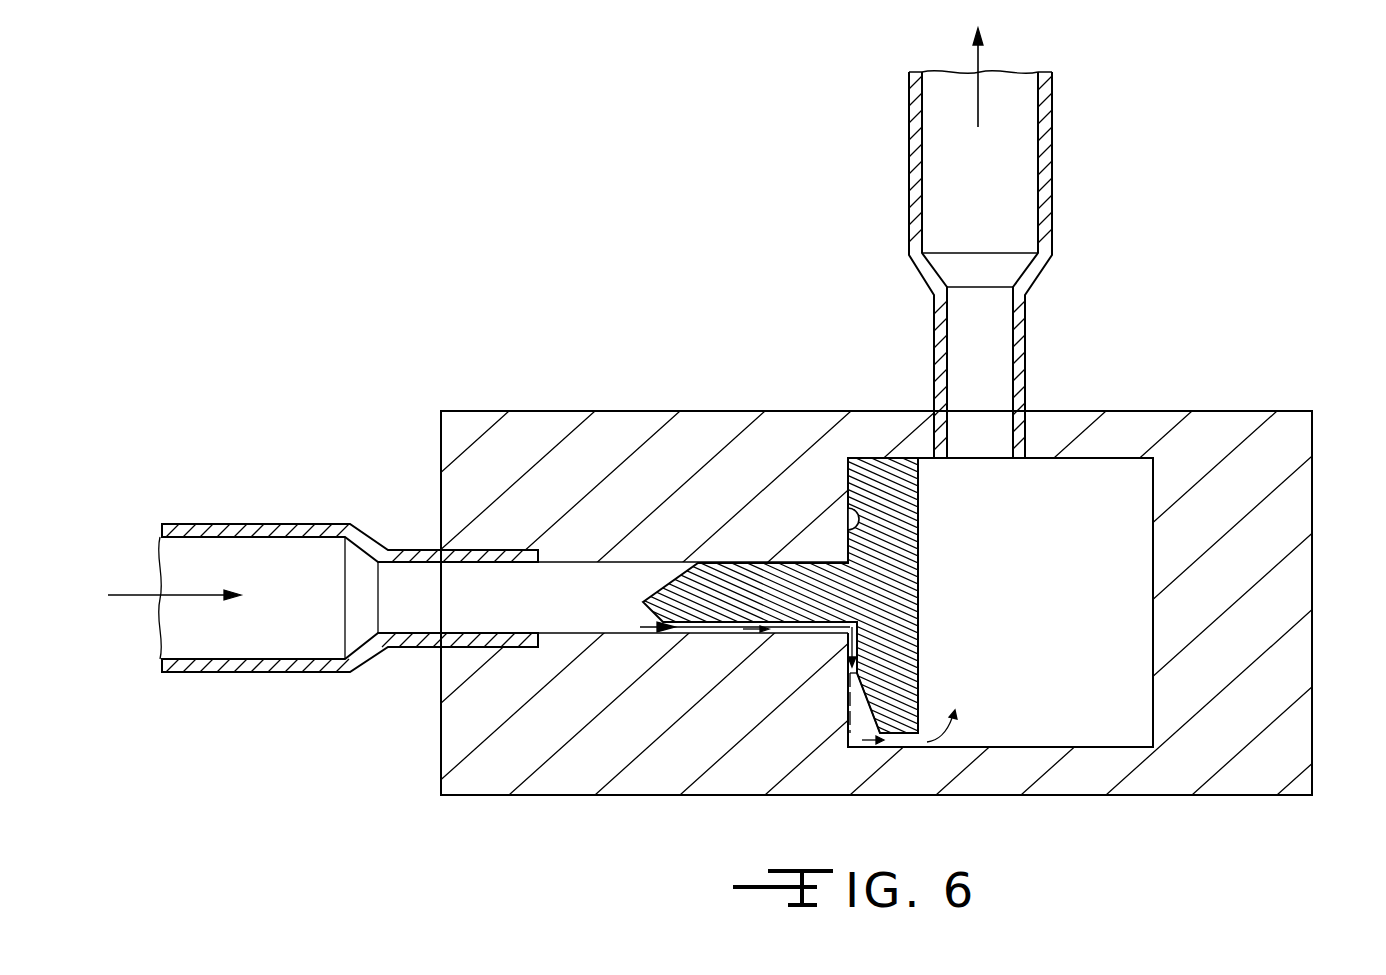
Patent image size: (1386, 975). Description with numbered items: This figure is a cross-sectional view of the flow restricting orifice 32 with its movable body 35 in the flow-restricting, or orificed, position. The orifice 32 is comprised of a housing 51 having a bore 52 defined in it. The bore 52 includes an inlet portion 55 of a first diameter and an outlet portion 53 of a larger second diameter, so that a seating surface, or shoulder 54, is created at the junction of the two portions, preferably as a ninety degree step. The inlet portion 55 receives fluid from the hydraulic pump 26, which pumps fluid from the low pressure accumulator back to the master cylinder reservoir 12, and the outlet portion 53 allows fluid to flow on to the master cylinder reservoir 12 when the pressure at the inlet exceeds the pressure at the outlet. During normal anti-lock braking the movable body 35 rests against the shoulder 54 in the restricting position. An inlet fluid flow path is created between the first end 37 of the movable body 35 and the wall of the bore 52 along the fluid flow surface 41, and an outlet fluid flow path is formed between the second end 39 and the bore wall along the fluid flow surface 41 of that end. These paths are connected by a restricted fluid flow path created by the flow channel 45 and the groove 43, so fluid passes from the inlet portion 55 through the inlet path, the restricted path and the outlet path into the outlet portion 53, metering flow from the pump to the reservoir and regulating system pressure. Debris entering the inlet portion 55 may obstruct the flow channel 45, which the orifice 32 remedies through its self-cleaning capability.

The flow restricting orifice 32 is at (1246, 390).
The housing 51 is at (1313, 482).
The bore 52 is at (1124, 445).
The outlet portion 53 is at (1117, 696).
The movable body 35 is at (950, 630).
The fluid flow surface 41 is at (718, 633).
The first end 37 is at (724, 578).
The second end 39 is at (893, 480).
The shoulder 54 is at (849, 506).
The groove 43 is at (848, 747).
The flow channel 45 is at (848, 666).
The inlet portion 55 is at (568, 607).
The hydraulic pump 26 is at (142, 592).
The master cylinder reservoir 12 is at (972, 56).